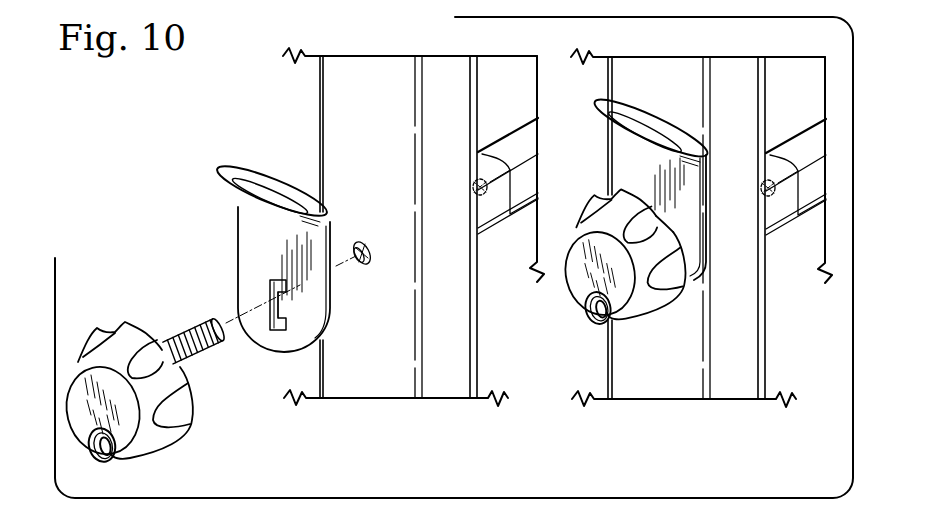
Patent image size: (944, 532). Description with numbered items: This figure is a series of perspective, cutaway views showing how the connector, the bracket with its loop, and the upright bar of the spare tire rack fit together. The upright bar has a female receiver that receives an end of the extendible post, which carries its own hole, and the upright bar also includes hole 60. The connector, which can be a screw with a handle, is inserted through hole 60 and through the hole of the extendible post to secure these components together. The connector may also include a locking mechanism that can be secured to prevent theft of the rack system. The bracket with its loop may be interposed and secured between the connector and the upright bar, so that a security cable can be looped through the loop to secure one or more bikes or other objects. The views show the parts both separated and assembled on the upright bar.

The hole 60 is at (367, 243).